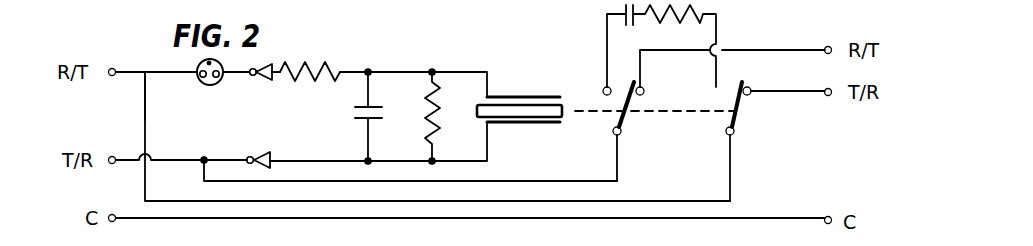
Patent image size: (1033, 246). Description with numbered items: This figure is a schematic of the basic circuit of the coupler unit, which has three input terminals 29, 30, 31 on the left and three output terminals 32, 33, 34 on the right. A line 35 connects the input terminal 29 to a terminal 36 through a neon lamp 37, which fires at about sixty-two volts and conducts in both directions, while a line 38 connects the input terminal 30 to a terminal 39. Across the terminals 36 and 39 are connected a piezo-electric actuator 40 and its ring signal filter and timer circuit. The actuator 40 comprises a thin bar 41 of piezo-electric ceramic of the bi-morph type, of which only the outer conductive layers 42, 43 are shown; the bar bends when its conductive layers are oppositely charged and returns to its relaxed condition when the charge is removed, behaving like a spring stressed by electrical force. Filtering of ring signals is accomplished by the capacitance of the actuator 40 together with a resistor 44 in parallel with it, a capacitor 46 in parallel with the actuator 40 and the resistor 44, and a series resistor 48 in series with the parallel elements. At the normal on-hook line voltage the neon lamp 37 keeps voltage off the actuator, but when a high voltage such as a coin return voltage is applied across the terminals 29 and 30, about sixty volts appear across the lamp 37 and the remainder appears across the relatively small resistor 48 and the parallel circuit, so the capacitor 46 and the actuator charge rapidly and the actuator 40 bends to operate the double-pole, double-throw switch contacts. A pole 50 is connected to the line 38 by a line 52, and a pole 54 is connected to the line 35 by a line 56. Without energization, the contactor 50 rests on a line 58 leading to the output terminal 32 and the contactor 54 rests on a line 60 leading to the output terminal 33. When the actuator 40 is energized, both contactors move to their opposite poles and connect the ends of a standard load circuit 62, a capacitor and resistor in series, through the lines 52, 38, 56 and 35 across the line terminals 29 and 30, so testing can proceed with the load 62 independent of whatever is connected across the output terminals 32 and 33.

The input terminal 29 is at (113, 77).
The input terminal 30 is at (113, 155).
The input terminal 31 is at (110, 214).
The output terminal 32 is at (826, 46).
The output terminal 33 is at (828, 97).
The output terminal 34 is at (826, 215).
The line 35 is at (163, 74).
The terminal 36 is at (255, 77).
The neon lamp 37 is at (213, 85).
The line 38 is at (208, 156).
The terminal 39 is at (252, 156).
The piezo-electric actuator 40 is at (535, 96).
The bar 41 is at (540, 119).
The outer conductive layer 42 is at (509, 94).
The outer conductive layer 43 is at (508, 125).
The resistor 44 is at (425, 111).
The capacitor 46 is at (360, 119).
The series resistor 48 is at (301, 78).
The pole 50 is at (622, 132).
The line 52 is at (618, 166).
The pole 54 is at (735, 132).
The line 56 is at (731, 177).
The line 58 is at (752, 49).
The line 60 is at (780, 89).
The load circuit 62 is at (661, 46).